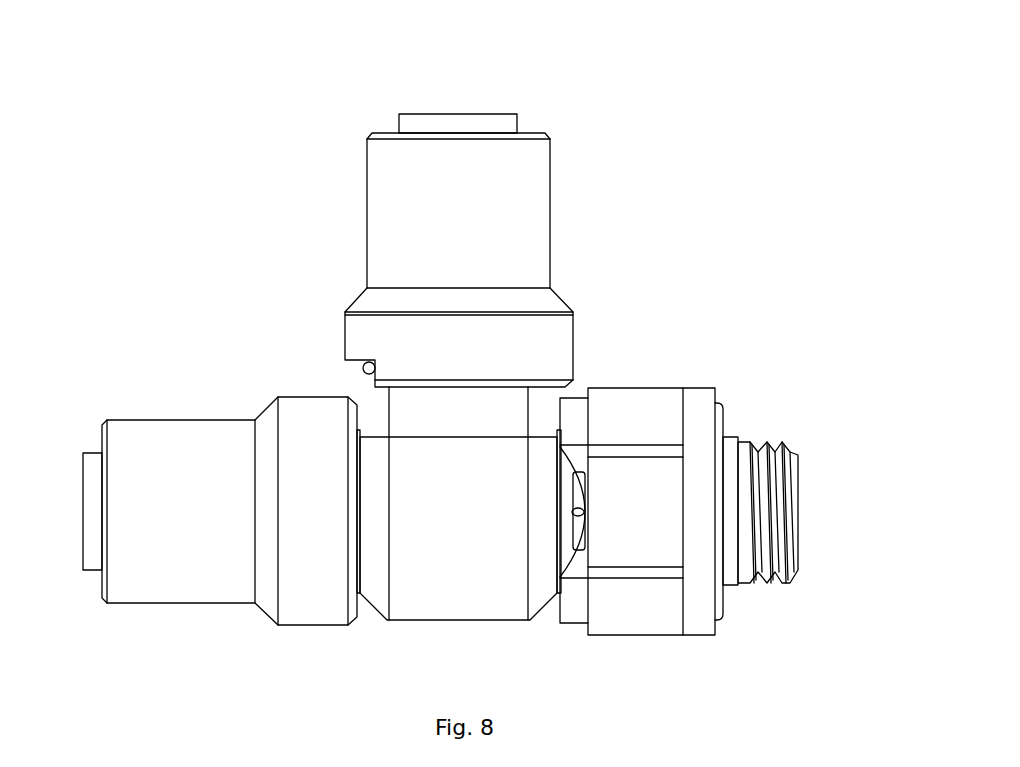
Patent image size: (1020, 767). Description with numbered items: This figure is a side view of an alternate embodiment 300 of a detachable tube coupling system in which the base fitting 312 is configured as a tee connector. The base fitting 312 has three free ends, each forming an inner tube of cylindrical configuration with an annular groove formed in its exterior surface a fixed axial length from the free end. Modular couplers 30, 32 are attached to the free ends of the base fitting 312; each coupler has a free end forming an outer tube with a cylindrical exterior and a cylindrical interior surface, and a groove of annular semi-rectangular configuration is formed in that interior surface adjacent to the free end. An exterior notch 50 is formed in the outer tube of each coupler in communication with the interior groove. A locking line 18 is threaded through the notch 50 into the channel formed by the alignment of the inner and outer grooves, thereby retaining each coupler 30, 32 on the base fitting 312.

The alternate embodiment 300 is at (278, 100).
The modular coupler 32 is at (548, 135).
The exterior notch 50 is at (345, 360).
The locking line 18 is at (363, 368).
The base fitting 312 is at (428, 622).
The modular coupler 30 is at (715, 392).